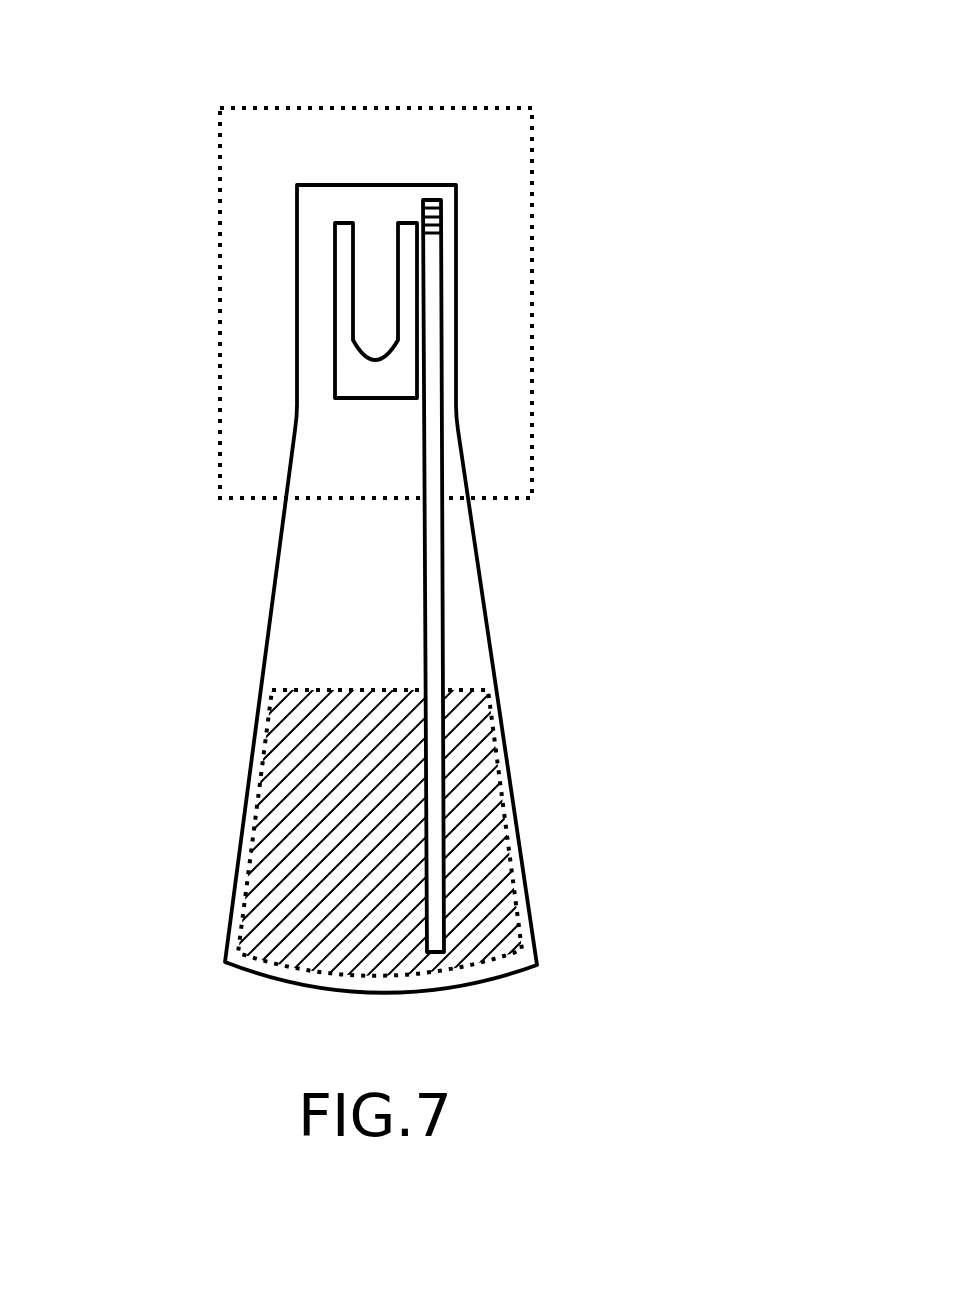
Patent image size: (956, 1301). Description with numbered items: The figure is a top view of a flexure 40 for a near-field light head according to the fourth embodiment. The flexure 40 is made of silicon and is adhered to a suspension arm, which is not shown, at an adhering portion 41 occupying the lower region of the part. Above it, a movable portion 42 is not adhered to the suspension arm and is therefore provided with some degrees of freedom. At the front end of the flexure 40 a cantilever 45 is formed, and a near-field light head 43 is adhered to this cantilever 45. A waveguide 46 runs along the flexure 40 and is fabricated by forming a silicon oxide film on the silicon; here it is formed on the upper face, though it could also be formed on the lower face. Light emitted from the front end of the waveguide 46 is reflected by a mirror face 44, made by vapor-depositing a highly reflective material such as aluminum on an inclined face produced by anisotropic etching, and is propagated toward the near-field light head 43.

The flexure 40 is at (733, 947).
The adhering portion 41 is at (313, 845).
The movable portion 42 is at (157, 204).
The near-field light head 43 is at (390, 140).
The mirror face 44 is at (432, 207).
The cantilever 45 is at (375, 318).
The waveguide 46 is at (434, 605).